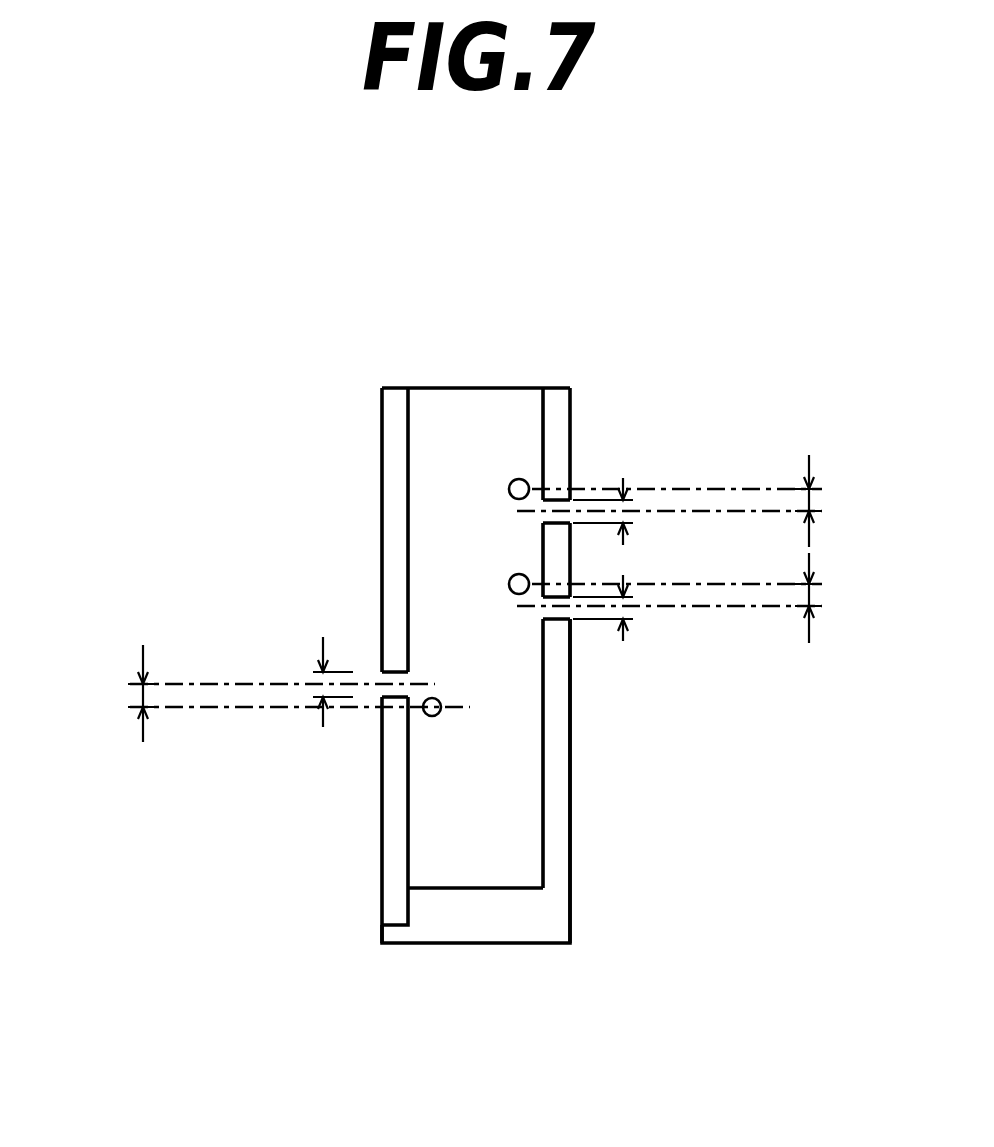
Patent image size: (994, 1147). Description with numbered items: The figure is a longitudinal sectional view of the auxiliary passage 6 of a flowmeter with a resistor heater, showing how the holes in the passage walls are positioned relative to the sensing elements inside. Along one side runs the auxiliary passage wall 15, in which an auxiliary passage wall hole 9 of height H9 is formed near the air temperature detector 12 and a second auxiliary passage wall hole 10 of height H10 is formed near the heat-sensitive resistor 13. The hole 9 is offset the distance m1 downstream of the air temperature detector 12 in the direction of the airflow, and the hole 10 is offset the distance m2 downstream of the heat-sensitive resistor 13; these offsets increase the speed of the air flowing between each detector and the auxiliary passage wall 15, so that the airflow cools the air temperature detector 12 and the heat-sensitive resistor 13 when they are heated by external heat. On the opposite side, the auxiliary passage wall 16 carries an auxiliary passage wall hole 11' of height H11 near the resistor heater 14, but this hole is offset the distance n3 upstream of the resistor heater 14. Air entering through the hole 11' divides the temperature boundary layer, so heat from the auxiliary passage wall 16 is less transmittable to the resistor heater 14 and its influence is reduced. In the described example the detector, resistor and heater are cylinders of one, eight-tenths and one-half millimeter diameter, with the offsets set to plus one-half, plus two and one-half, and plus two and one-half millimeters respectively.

The auxiliary passage 6 is at (487, 850).
The auxiliary passage wall hole 9 is at (579, 502).
The auxiliary passage wall hole 10 is at (581, 622).
The auxiliary passage wall hole 11' is at (305, 626).
The air temperature detector 12 is at (507, 483).
The heat-sensitive resistor 13 is at (507, 580).
The resistor heater 14 is at (443, 708).
The auxiliary passage wall 15 is at (547, 780).
The auxiliary passage wall 16 is at (405, 786).
The height of auxiliary passage wall hole H9 is at (628, 518).
The height of auxiliary passage wall hole H10 is at (628, 640).
The height of auxiliary passage wall hole H11 is at (313, 697).
The offset distance m1 is at (850, 501).
The offset distance m2 is at (850, 598).
The offset distance n3 is at (109, 693).